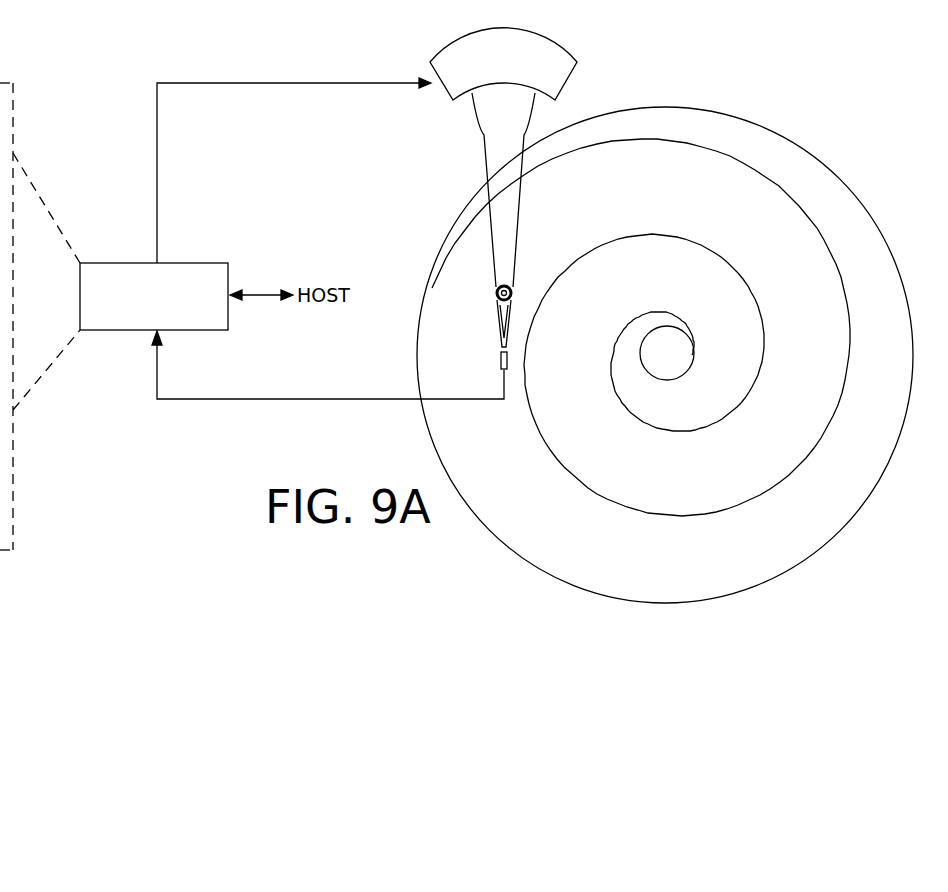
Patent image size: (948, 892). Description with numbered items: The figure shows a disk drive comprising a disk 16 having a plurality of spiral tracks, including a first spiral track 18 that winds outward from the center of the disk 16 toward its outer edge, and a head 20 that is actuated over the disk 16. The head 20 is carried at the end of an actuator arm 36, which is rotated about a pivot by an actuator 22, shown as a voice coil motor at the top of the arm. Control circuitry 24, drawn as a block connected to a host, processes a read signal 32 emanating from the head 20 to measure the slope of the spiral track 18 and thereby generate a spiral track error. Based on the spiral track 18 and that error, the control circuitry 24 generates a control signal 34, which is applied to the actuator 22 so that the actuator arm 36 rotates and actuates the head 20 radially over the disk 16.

The disk 16 is at (822, 145).
The first spiral track 18 is at (697, 143).
The head 20 is at (490, 374).
The actuator 22 is at (449, 98).
The control circuitry 24 is at (196, 263).
The read signal 32 is at (290, 400).
The control signal 34 is at (157, 157).
The actuator arm 36 is at (485, 156).